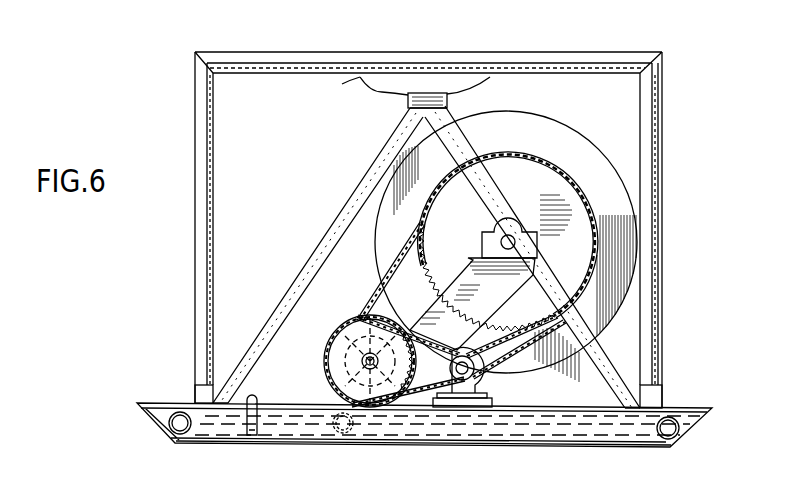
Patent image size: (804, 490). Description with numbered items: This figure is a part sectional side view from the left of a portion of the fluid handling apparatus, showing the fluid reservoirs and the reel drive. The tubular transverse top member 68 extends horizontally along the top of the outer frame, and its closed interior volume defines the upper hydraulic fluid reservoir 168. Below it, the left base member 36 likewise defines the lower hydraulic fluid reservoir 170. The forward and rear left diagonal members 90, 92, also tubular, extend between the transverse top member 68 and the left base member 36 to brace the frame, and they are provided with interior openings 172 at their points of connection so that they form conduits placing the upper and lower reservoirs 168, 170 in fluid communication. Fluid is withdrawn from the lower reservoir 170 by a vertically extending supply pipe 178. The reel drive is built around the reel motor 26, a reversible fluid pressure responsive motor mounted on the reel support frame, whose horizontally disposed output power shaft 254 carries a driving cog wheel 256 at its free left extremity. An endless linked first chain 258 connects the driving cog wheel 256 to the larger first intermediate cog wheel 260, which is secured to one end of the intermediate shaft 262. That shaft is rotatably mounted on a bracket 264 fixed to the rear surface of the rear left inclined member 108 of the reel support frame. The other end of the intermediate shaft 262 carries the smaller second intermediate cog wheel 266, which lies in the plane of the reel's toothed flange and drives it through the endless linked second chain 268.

The upper hydraulic fluid reservoir 168 is at (430, 96).
The tubular transverse top member 68 is at (408, 101).
The interior openings 172 is at (392, 127).
The forward left diagonal member 90 is at (465, 132).
The rear left diagonal member 92 is at (344, 221).
The second chain 268 is at (420, 245).
The bracket 264 is at (423, 318).
The rear left inclined member 108 is at (470, 295).
The intermediate shaft 262 is at (354, 322).
The second intermediate cog wheel 266 is at (360, 362).
The first intermediate cog wheel 260 is at (342, 392).
The driving cog wheel 256 is at (455, 372).
The output power shaft 254 is at (472, 366).
The reel motor 26 is at (477, 385).
The supply pipe 178 is at (258, 400).
The first chain 258 is at (410, 408).
The left base member 36 is at (470, 445).
The lower hydraulic fluid reservoir 170 is at (581, 440).